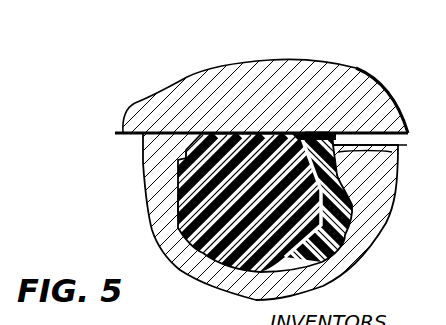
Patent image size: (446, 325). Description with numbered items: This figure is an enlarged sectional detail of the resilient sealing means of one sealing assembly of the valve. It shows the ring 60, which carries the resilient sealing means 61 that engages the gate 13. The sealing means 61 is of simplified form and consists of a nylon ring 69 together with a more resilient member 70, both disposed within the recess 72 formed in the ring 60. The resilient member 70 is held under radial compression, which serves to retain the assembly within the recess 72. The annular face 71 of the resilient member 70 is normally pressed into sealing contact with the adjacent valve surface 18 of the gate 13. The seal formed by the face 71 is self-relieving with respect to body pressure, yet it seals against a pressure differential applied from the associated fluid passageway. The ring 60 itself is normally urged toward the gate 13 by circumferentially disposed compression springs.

The gate 13 is at (153, 98).
The valve surface 18 is at (127, 134).
The ring 60 is at (363, 258).
The resilient sealing means 61 is at (168, 178).
The nylon ring 69 is at (180, 203).
The resilient member 70 is at (346, 216).
The annular face 71 is at (316, 133).
The recess 72 is at (392, 152).